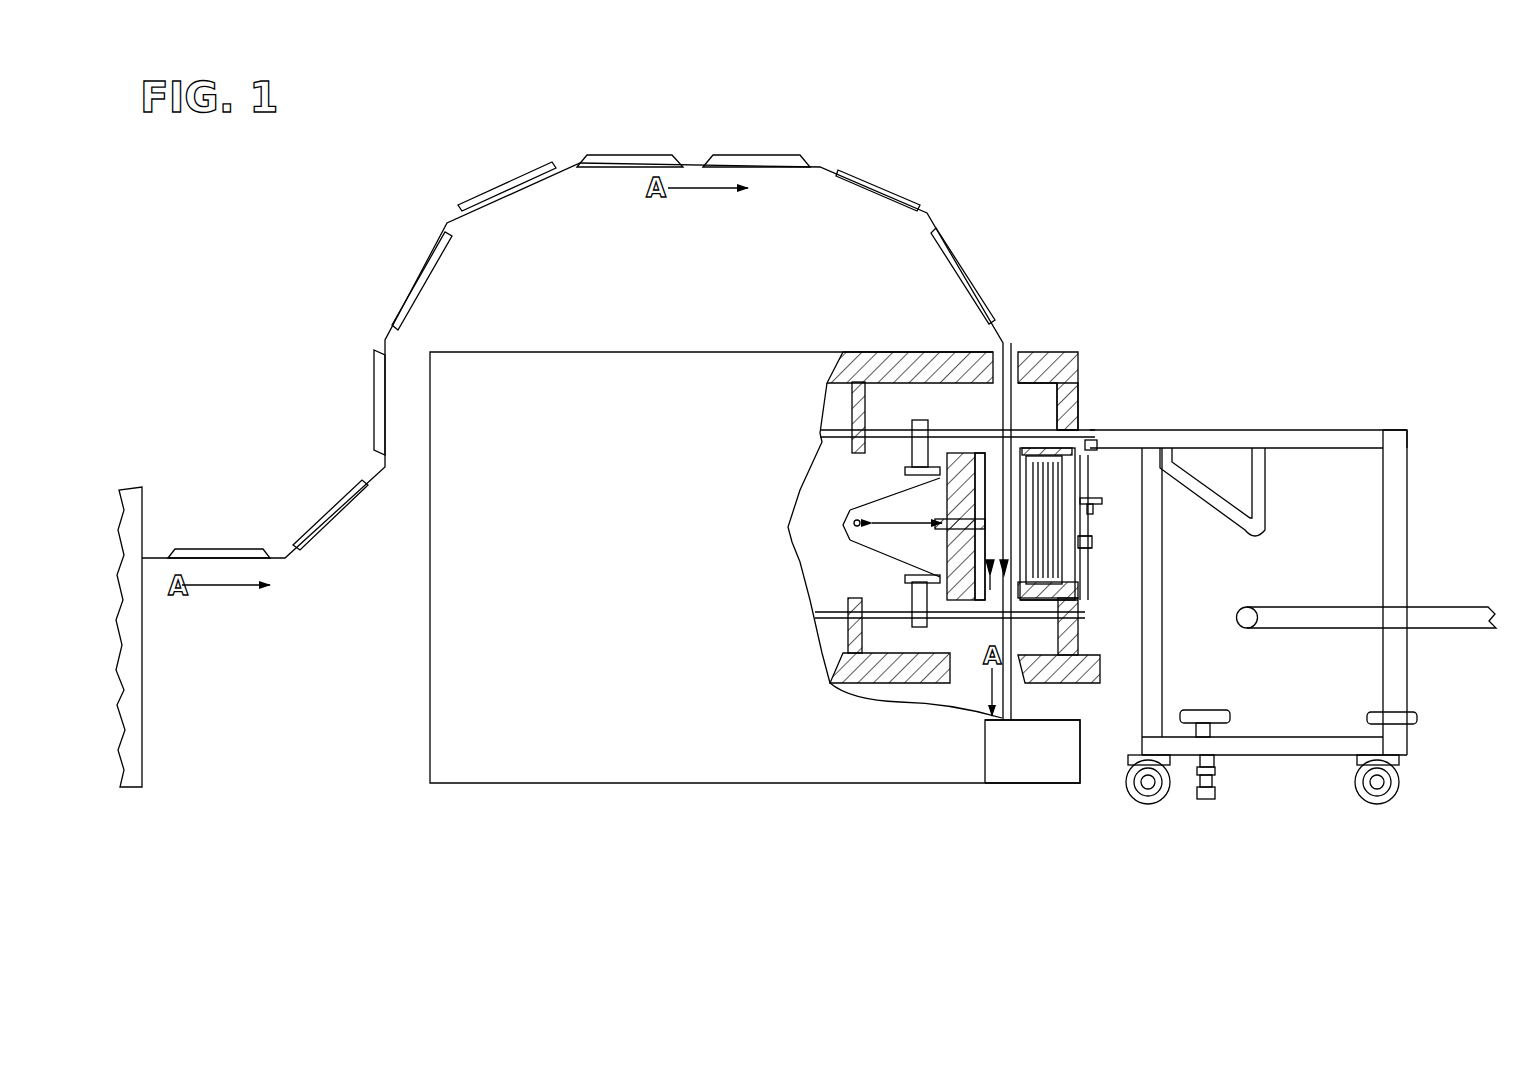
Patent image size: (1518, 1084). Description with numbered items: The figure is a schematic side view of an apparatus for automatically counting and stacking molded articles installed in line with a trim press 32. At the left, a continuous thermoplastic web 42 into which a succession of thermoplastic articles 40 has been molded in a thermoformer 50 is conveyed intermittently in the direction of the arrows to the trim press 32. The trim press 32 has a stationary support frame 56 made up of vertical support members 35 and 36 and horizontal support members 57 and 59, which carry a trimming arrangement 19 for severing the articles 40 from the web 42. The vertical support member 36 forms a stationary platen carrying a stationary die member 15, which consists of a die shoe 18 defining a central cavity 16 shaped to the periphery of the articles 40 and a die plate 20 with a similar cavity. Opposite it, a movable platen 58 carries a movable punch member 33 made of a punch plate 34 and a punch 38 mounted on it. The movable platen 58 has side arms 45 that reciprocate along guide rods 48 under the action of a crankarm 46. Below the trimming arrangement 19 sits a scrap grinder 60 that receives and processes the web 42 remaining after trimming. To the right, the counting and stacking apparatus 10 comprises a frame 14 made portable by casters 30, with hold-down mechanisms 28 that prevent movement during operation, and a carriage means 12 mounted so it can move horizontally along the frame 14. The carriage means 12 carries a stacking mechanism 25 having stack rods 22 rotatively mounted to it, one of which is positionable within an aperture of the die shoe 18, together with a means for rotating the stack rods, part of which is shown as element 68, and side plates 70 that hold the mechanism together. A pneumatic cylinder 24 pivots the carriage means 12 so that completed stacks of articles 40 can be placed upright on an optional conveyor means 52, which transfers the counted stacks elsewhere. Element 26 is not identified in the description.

The article counting and stacking apparatus 10 is at (1330, 420).
The carriage means 12 is at (1090, 595).
The frame 14 is at (1407, 535).
The stationary die member 15 is at (1059, 655).
The central cavity 16 is at (1088, 570).
The die shoe 18 is at (1037, 406).
The trimming arrangement 19 is at (975, 470).
The die plate 20 is at (1000, 470).
The stack rods 22 is at (1085, 618).
The pneumatic cylinder 24 is at (1111, 527).
The stacking mechanism 25 is at (1097, 445).
The bracket 26 is at (1265, 492).
The hold-down mechanisms 28 is at (1205, 710).
The casters 30 is at (1138, 803).
The trim press 32 is at (712, 340).
The movable punch member 33 is at (965, 564).
The punch plate 34 is at (945, 440).
The vertical support member 35 is at (820, 448).
The vertical support member 36 is at (1075, 378).
The punch 38 is at (955, 600).
The thermoplastic articles 40 is at (500, 190).
The thermoplastic web 42 is at (848, 165).
The side arms 45 is at (912, 602).
The crankarm 46 is at (808, 568).
The guide rods 48 is at (866, 426).
The thermoformer 50 is at (128, 487).
The conveyor means 52 is at (1435, 630).
The stationary support frame 56 is at (860, 352).
The horizontal support member 57 is at (1065, 355).
The movable platen 58 is at (880, 486).
The horizontal support member 59 is at (872, 690).
The scrap grinder 60 is at (1050, 786).
The means for rotating stack rods 68 is at (1100, 546).
The side plates 70 is at (1100, 576).